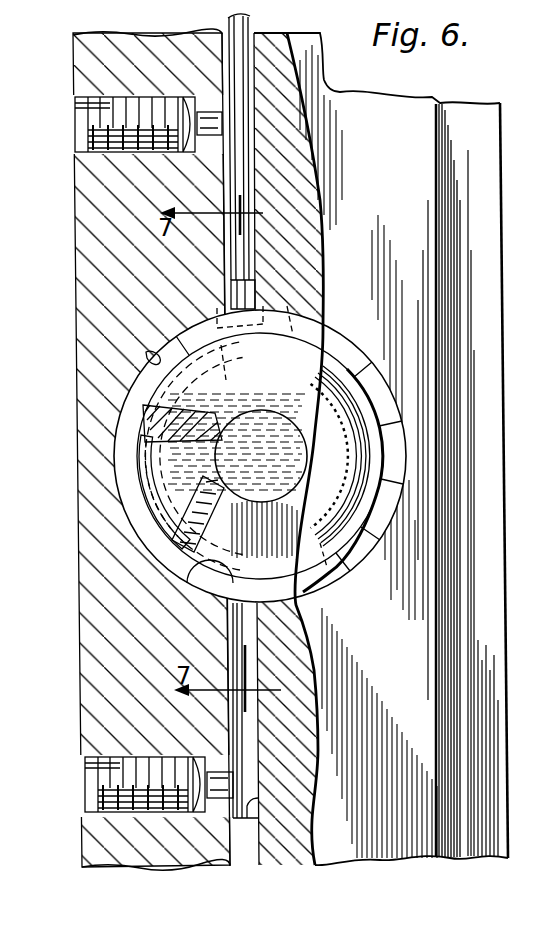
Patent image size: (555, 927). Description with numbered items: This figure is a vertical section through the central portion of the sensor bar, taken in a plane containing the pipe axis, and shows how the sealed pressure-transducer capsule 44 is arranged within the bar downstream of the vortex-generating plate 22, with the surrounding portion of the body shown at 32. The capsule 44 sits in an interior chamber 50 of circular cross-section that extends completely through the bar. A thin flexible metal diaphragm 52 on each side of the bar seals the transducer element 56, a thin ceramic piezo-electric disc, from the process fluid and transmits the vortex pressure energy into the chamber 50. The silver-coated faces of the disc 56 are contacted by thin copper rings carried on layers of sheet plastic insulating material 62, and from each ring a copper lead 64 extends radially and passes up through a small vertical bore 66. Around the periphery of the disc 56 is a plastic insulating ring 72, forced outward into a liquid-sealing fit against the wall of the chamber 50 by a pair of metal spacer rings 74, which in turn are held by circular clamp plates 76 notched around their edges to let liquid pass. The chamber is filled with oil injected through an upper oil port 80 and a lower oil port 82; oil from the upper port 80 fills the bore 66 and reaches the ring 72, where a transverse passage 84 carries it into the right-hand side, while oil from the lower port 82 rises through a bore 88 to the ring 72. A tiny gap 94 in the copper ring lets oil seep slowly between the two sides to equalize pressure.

The vortex-generating plate 22 is at (100, 647).
The housing 32 is at (515, 303).
The pressure-transducer capsule 44 is at (352, 318).
The interior chamber 50 is at (157, 360).
The diaphragm 52 is at (362, 567).
The transducer element 56 is at (261, 484).
The sheet plastic insulating material 62 is at (147, 463).
The copper lead 64 is at (251, 17).
The vertical bore 66 is at (252, 108).
The plastic insulating ring 72 is at (130, 407).
The metal spacer ring 74 is at (173, 425).
The clamp plate 76 is at (299, 598).
The oil port 80 is at (80, 107).
The oil port 82 is at (86, 798).
The transverse passage 84 is at (217, 310).
The bore 88 is at (258, 818).
The gap 94 is at (236, 417).